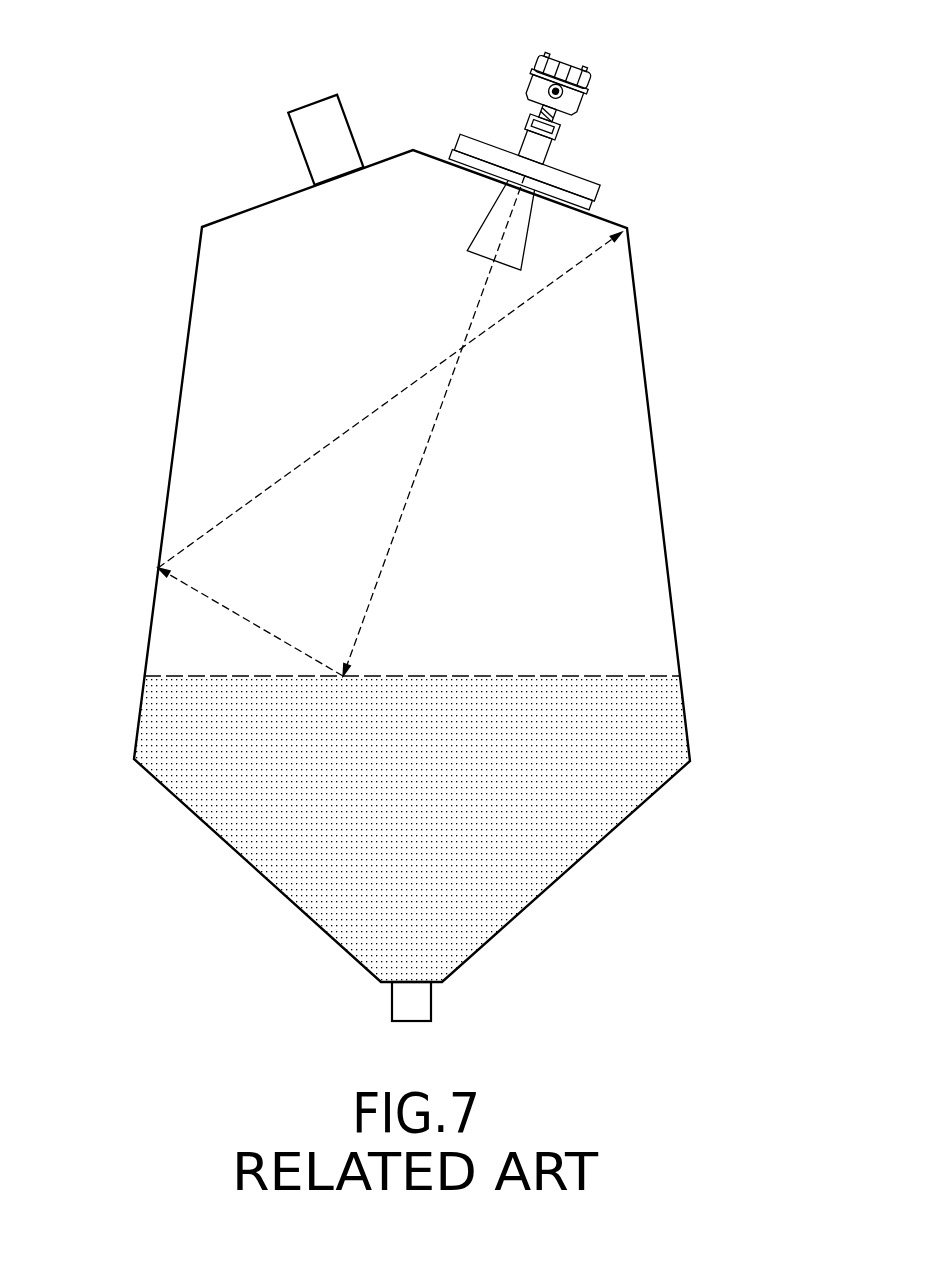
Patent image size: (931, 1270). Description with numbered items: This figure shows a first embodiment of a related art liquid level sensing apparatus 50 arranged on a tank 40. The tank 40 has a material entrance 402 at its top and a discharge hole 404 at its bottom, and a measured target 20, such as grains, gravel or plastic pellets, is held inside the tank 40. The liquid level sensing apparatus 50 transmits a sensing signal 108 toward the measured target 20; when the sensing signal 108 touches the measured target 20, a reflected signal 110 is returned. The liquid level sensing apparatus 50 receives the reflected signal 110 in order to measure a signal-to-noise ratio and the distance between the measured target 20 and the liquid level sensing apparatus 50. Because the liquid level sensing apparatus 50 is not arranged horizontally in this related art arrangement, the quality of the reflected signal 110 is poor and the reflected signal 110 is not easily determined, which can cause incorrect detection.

The measured target 20 is at (167, 718).
The tank 40 is at (167, 492).
The related art liquid level sensing apparatus 50 is at (500, 60).
The sensing signal 108 is at (437, 422).
The reflected signal 110 is at (210, 601).
The material entrance 402 is at (305, 145).
The discharge hole 404 is at (422, 1003).